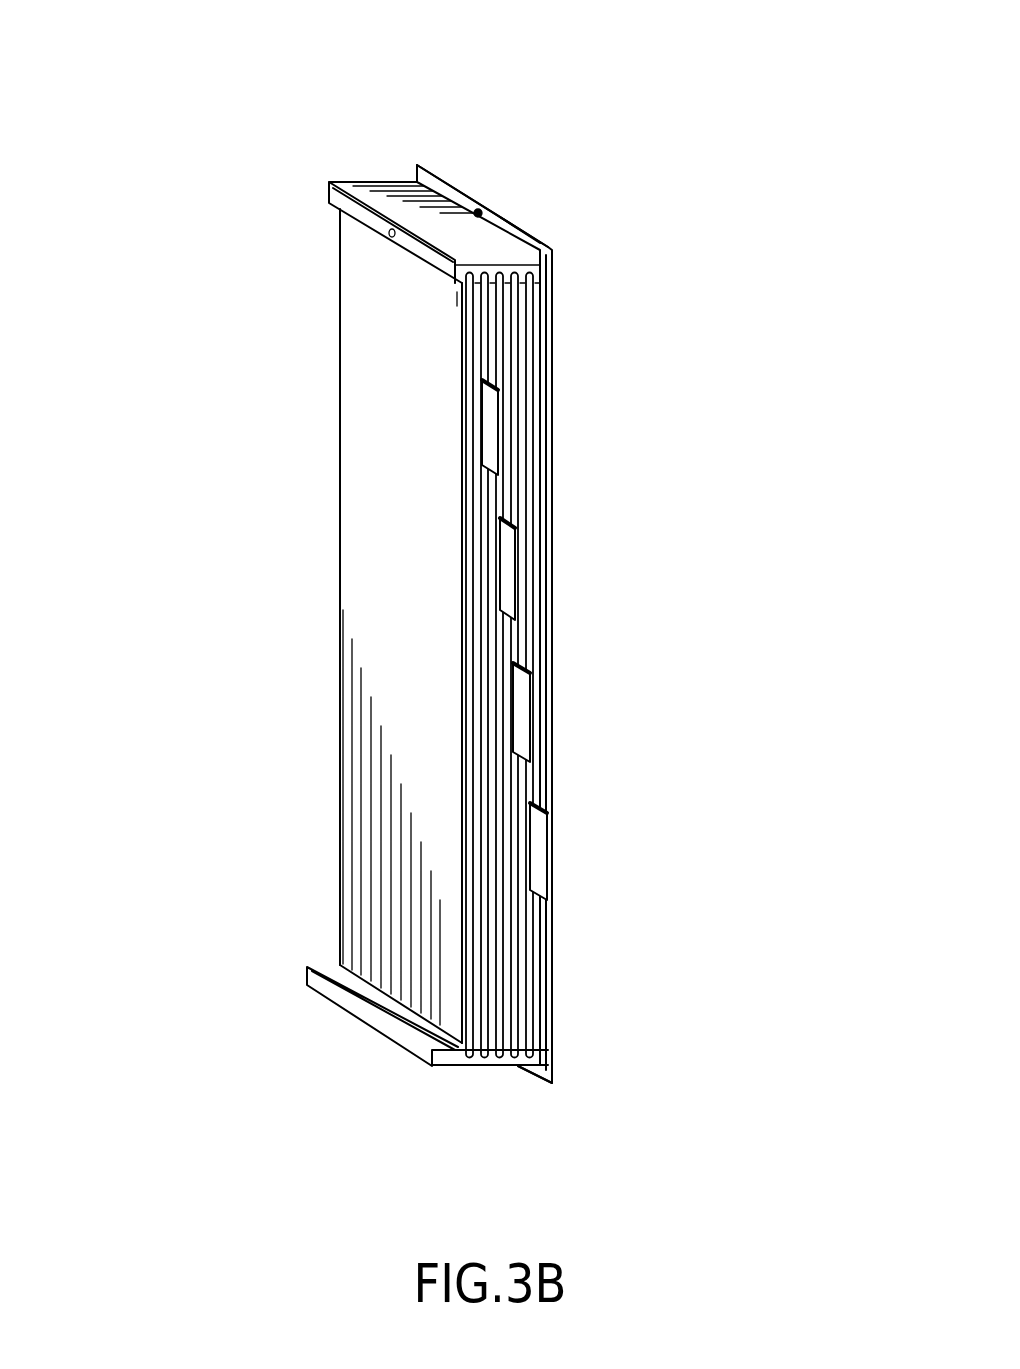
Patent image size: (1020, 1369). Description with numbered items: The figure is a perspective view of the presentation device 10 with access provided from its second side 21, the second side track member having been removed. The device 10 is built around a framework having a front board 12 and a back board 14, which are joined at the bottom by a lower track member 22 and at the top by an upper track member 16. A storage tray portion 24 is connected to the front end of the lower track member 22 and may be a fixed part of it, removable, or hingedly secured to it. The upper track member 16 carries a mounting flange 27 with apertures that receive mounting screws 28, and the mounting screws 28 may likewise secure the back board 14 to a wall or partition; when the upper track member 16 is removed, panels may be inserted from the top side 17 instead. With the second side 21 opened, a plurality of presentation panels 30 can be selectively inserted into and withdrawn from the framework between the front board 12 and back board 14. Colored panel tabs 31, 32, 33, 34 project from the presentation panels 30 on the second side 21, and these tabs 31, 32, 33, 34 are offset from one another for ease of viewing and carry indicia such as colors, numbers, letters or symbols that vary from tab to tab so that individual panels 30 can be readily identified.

The device 10 is at (332, 740).
The front board 12 is at (362, 383).
The back board 14 is at (554, 345).
The upper track member 16 is at (400, 198).
The top side 17 is at (444, 156).
The second side 21 is at (575, 441).
The lower track member 22 is at (517, 1068).
The storage tray portion 24 is at (328, 962).
The mounting flange 27 is at (512, 240).
The mounting screws 28 is at (479, 212).
The presentation panels 30 is at (537, 928).
The tab 31 is at (497, 432).
The tab 32 is at (519, 573).
The tab 33 is at (531, 718).
The tab 34 is at (553, 860).